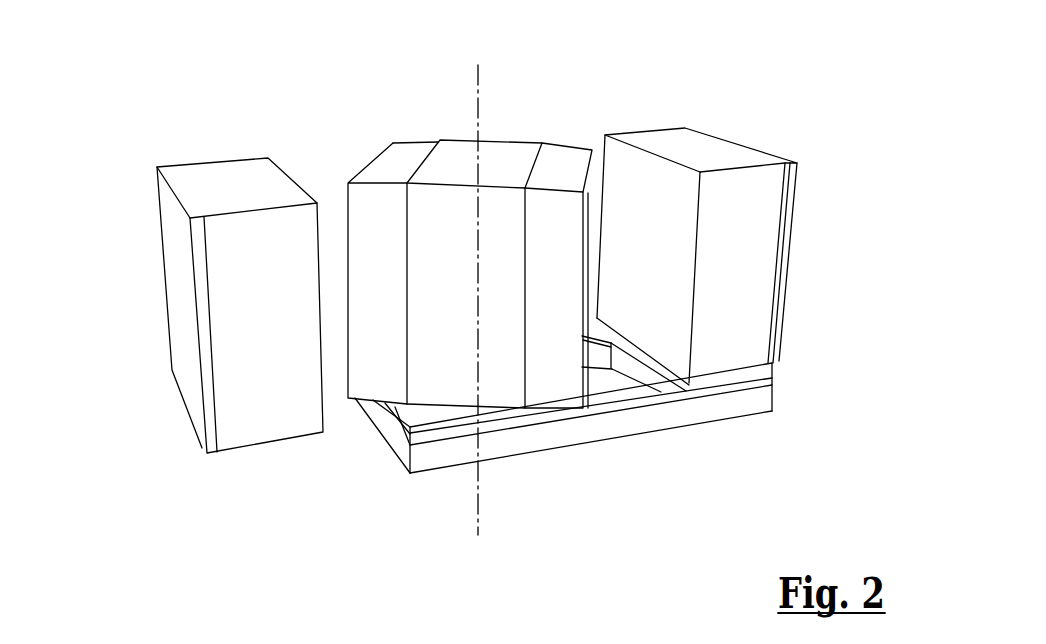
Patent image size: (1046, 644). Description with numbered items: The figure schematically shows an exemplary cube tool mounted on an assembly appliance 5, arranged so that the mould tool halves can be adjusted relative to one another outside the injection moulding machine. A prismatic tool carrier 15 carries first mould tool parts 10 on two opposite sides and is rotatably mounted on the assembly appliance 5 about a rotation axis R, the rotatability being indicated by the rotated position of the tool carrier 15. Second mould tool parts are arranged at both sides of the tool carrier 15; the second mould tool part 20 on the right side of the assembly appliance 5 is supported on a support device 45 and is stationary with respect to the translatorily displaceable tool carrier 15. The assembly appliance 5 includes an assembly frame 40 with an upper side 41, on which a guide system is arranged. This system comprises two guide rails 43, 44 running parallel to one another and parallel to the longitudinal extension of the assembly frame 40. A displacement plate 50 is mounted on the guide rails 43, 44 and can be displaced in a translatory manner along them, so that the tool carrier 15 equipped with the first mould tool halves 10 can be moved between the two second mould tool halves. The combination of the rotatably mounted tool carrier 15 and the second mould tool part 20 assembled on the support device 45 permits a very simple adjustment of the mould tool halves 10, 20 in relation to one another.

The assembly appliance 5 is at (338, 452).
The first mould tool part 10 is at (590, 160).
The tool carrier 15 is at (510, 153).
The second mould tool part 20 is at (752, 245).
The assembly frame 40 is at (762, 400).
The upper side 41 is at (692, 386).
The guide rail 43 is at (608, 400).
The guide rail 44 is at (604, 327).
The support device 45 is at (780, 373).
The displacement plate 50 is at (443, 428).
The rotation axis R is at (477, 118).